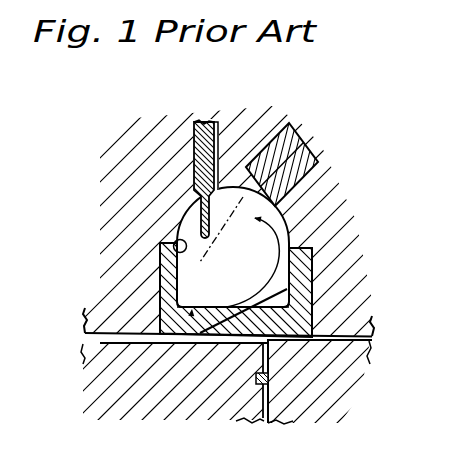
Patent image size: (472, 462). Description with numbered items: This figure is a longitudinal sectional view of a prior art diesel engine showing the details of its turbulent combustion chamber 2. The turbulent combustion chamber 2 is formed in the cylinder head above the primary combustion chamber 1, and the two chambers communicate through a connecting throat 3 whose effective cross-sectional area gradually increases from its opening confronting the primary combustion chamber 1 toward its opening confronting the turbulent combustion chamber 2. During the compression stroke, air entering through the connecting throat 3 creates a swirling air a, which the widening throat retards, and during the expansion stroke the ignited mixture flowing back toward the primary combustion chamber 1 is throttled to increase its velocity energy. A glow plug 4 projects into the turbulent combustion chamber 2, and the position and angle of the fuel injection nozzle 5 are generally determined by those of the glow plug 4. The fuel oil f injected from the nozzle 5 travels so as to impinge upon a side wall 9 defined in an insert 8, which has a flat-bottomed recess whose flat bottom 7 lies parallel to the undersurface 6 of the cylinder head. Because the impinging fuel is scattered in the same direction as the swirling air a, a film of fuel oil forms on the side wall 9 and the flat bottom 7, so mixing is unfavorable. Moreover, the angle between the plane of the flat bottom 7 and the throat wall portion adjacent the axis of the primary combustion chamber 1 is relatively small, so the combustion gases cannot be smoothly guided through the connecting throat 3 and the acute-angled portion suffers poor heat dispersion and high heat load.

The primary combustion chamber 1 is at (145, 341).
The turbulent combustion chamber 2 is at (285, 216).
The connecting throat 3 is at (218, 328).
The glow plug 4 is at (194, 152).
The fuel injection nozzle 5 is at (292, 124).
The undersurface of the cylinder head 6 is at (97, 339).
The flat bottom 7 is at (202, 303).
The insert 8 is at (313, 302).
The side wall 9 is at (174, 238).
The swirling air a is at (253, 262).
The fuel oil f is at (217, 190).